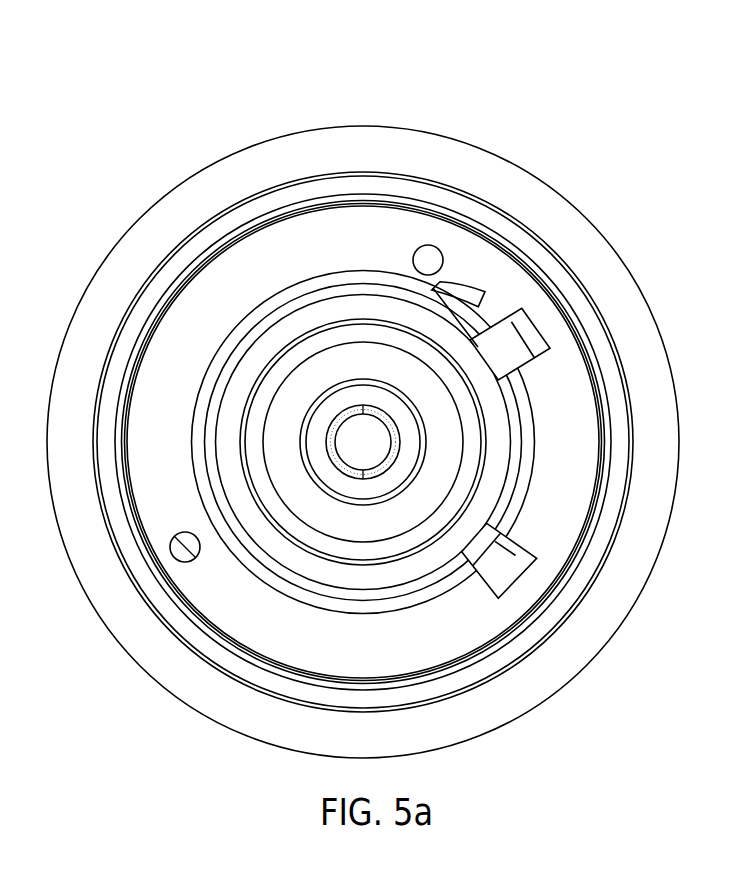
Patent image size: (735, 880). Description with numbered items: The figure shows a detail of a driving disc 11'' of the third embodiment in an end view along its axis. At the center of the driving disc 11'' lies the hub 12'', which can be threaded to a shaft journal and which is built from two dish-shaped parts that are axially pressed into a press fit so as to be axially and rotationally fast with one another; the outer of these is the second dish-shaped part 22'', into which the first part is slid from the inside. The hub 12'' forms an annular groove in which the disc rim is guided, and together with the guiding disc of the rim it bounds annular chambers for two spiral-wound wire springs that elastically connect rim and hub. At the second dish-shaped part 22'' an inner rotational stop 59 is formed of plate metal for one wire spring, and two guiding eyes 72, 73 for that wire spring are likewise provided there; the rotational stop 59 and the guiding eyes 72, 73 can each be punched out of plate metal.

The driving disc 11'' is at (373, 417).
The hub 12'' is at (407, 442).
The second dish-shaped part 22'' is at (418, 442).
The inner rotational stop 59 is at (483, 308).
The guiding eye 72 is at (513, 347).
The guiding eye 73 is at (512, 572).